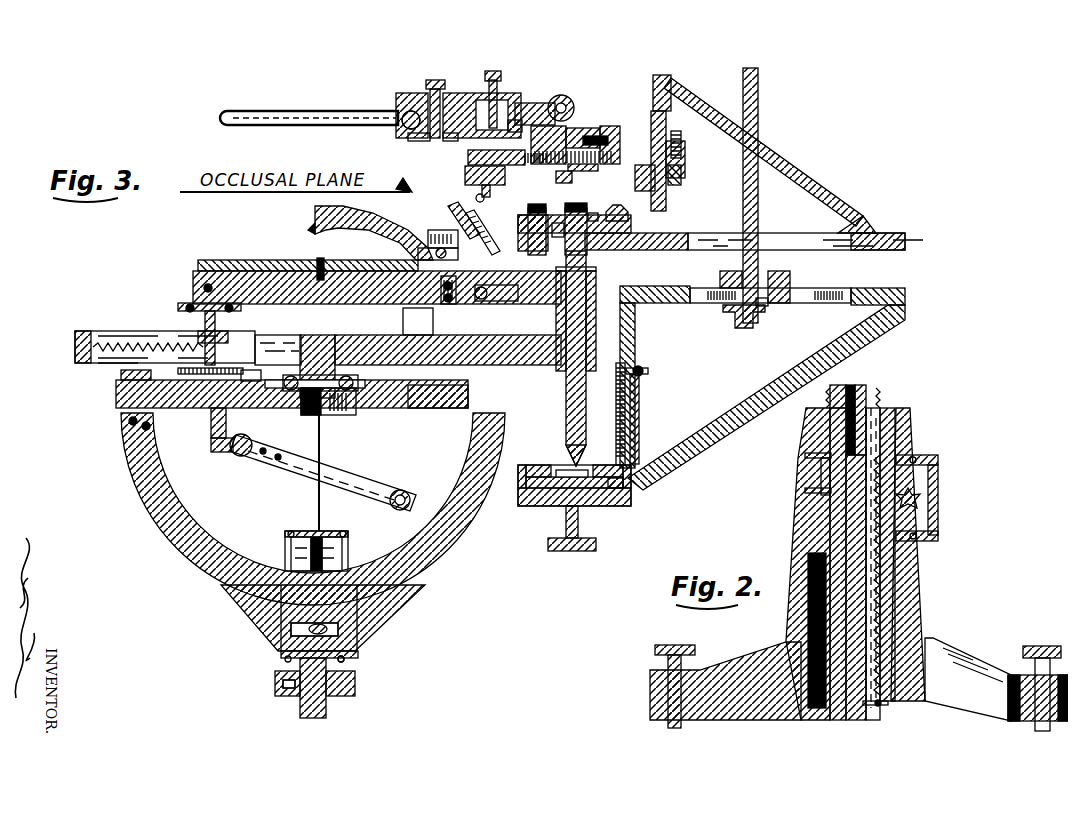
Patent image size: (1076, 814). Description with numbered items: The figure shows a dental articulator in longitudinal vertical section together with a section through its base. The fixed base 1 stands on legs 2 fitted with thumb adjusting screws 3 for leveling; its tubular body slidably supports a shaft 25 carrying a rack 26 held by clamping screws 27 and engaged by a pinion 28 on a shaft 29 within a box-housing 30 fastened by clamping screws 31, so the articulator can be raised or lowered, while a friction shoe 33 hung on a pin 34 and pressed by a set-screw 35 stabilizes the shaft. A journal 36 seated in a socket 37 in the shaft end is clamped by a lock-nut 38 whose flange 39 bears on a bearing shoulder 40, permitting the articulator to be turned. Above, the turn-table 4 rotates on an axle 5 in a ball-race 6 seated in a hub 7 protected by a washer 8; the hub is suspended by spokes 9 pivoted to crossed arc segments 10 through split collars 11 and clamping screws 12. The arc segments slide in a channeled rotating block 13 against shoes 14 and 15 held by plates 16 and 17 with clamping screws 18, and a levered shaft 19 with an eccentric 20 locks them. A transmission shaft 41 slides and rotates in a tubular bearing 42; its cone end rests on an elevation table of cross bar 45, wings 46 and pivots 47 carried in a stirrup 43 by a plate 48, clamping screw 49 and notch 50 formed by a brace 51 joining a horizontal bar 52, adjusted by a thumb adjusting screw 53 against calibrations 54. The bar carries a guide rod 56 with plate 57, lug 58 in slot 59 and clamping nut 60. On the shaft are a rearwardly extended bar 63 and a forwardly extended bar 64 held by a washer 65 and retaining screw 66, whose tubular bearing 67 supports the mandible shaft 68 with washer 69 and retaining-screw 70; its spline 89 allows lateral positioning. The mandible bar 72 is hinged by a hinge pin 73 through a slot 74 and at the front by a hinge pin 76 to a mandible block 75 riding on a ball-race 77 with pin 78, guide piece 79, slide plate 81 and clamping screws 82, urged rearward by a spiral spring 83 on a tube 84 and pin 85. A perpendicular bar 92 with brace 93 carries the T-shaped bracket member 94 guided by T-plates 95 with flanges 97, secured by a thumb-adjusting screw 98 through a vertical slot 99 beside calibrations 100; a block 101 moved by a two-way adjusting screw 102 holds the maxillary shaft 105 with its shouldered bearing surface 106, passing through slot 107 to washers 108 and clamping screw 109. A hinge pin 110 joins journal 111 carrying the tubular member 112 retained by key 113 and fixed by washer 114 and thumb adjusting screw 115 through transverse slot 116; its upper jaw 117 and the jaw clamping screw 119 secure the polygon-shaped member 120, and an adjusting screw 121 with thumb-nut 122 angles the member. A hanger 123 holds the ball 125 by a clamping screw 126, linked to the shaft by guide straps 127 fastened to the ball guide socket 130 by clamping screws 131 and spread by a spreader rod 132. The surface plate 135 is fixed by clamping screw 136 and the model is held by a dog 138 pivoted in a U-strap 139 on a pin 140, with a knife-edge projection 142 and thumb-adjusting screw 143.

In FIG. 2, the base 1 is at (793, 528).
In FIG. 2, the legs 2 is at (730, 655).
In FIG. 2, the thumb adjusting screws 3 is at (1040, 638).
In FIG. 3, the turn-table 4 is at (372, 327).
In FIG. 3, the axle 5 is at (306, 327).
In FIG. 3, the ball-race 6 is at (348, 407).
In FIG. 3, the hub 7 is at (313, 413).
In FIG. 3, the washer 8 is at (350, 372).
In FIG. 3, the spokes 9 is at (108, 385).
In FIG. 3, the arc segments 10 is at (276, 540).
In FIG. 3, the split collars 11 is at (144, 415).
In FIG. 3, the clamping screws 12 is at (152, 428).
In FIG. 3, the rotating block 13 is at (334, 545).
In FIG. 3, the shoe 14 is at (372, 613).
In FIG. 3, the shoe 15 is at (336, 530).
In FIG. 3, the plate 16 is at (294, 523).
In FIG. 3, the plate 17 is at (337, 652).
In FIG. 3, the clamping screws 18 is at (337, 523).
In FIG. 3, the levered shaft 19 is at (283, 621).
In FIG. 3, the eccentric 20 is at (350, 646).
In FIG. 2, the shaft 25 is at (820, 708).
In FIG. 2, the rack 26 is at (885, 695).
In FIG. 2, the clamping screws 27 is at (902, 445).
In FIG. 2, the pinion 28 is at (930, 490).
In FIG. 2, the shaft 29 is at (912, 496).
In FIG. 2, the box-housing 30 is at (930, 455).
In FIG. 2, the clamping screws 31 is at (930, 528).
In FIG. 2, the friction shoe 33 is at (813, 465).
In FIG. 2, the pin 34 is at (797, 447).
In FIG. 2, the set-screw 35 is at (797, 483).
In FIG. 3, the journal 36 is at (318, 700).
In FIG. 2, the socket 37 is at (856, 380).
In FIG. 3, the lock-nut 38 is at (347, 677).
In FIG. 3, the flange 39 is at (267, 668).
In FIG. 3, the bearing shoulder 40 is at (280, 682).
In FIG. 3, the transmission shaft 41 is at (578, 393).
In FIG. 3, the tubular bearing 42 is at (588, 280).
In FIG. 3, the stirrup 43 is at (617, 498).
In FIG. 3, the cross bar 45 is at (538, 498).
In FIG. 3, the wings 46 is at (574, 452).
In FIG. 3, the pivots 47 is at (623, 458).
In FIG. 3, the plate 48 is at (631, 388).
In FIG. 3, the clamping screw 49 is at (640, 364).
In FIG. 3, the notch 50 is at (625, 476).
In FIG. 3, the brace 51 is at (700, 442).
In FIG. 3, the horizontal bar 52 is at (645, 278).
In FIG. 3, the thumb adjusting screw 53 is at (572, 536).
In FIG. 3, the calibrations 54 is at (633, 415).
In FIG. 3, the guide rod 56 is at (750, 205).
In FIG. 3, the plate 57 is at (782, 274).
In FIG. 3, the lug 58 is at (760, 296).
In FIG. 3, the slot 59 is at (833, 290).
In FIG. 3, the clamping nut 60 is at (756, 318).
In FIG. 3, the rearwardly extended bar 63 is at (655, 232).
In FIG. 3, the forwardly extended bar 64 is at (578, 220).
In FIG. 3, the washer 65 is at (590, 207).
In FIG. 3, the retaining screw 66 is at (580, 196).
In FIG. 3, the tubular bearing 67 is at (561, 244).
In FIG. 3, the mandible shaft 68 is at (758, 268).
In FIG. 3, the washer 69 is at (483, 225).
In FIG. 3, the retaining-screw 70 is at (535, 200).
In FIG. 3, the mandible bar 72 is at (418, 321).
In FIG. 3, the hinge pin 73 is at (447, 301).
In FIG. 3, the slot 74 is at (485, 294).
In FIG. 3, the mandible block 75 is at (192, 305).
In FIG. 3, the hinge pin 76 is at (185, 273).
In FIG. 3, the ball-race 77 is at (230, 300).
In FIG. 3, the pin 78 is at (180, 300).
In FIG. 3, the guide piece 79 is at (146, 374).
In FIG. 3, the slide plate 81 is at (251, 375).
In FIG. 3, the clamping screws 82 is at (190, 366).
In FIG. 3, the spiral spring 83 is at (100, 355).
In FIG. 3, the tube 84 is at (140, 330).
In FIG. 3, the pin 85 is at (67, 339).
In FIG. 3, the spline 89 is at (627, 207).
In FIG. 3, the perpendicular bar 92 is at (645, 86).
In FIG. 3, the brace 93 is at (857, 220).
In FIG. 3, the bracket member 94 is at (460, 148).
In FIG. 3, the T-plates 95 is at (643, 105).
In FIG. 3, the flanges 97 is at (673, 165).
In FIG. 3, the thumb-adjusting screw 98 is at (677, 142).
In FIG. 3, the vertical slot 99 is at (682, 133).
In FIG. 3, the calibrations 100 is at (660, 180).
In FIG. 3, the block 101 is at (577, 140).
In FIG. 3, the two-way adjusting screw 102 is at (590, 128).
In FIG. 3, the maxillary shaft 105 is at (550, 86).
In FIG. 3, the shouldered bearing surface 106 is at (575, 120).
In FIG. 3, the slot 107 is at (575, 163).
In FIG. 3, the washers 108 is at (496, 192).
In FIG. 3, the clamping screw 109 is at (564, 172).
In FIG. 3, the hinge pin 110 is at (556, 95).
In FIG. 3, the journal 111 is at (508, 110).
In FIG. 3, the tubular member 112 is at (450, 85).
In FIG. 3, the key 113 is at (535, 103).
In FIG. 3, the washer 114 is at (488, 70).
In FIG. 3, the thumb adjusting screw 115 is at (486, 62).
In FIG. 3, the transverse slot 116 is at (400, 132).
In FIG. 3, the upper jaw 117 is at (410, 86).
In FIG. 3, the bolt 119 is at (437, 99).
In FIG. 3, the polygon-shaped member 120 is at (258, 97).
In FIG. 3, the adjusting screw 121 is at (450, 143).
In FIG. 3, the thumb-nut 122 is at (457, 165).
In FIG. 3, the hanger 123 is at (203, 430).
In FIG. 3, the ball 125 is at (228, 447).
In FIG. 3, the clamping screw 126 is at (203, 440).
In FIG. 3, the guide straps 127 is at (280, 462).
In FIG. 3, the ball guide socket 130 is at (253, 447).
In FIG. 3, the clamping screws 131 is at (268, 454).
In FIG. 3, the spreader rod 132 is at (388, 480).
In FIG. 3, the surface plate 135 is at (253, 251).
In FIG. 3, the clamping screw 136 is at (313, 252).
In FIG. 3, the dog 138 is at (385, 218).
In FIG. 3, the U-strap 139 is at (436, 221).
In FIG. 3, the pin 140 is at (410, 246).
In FIG. 3, the knife-edge projection 142 is at (305, 222).
In FIG. 3, the thumb-adjusting screw 143 is at (450, 196).